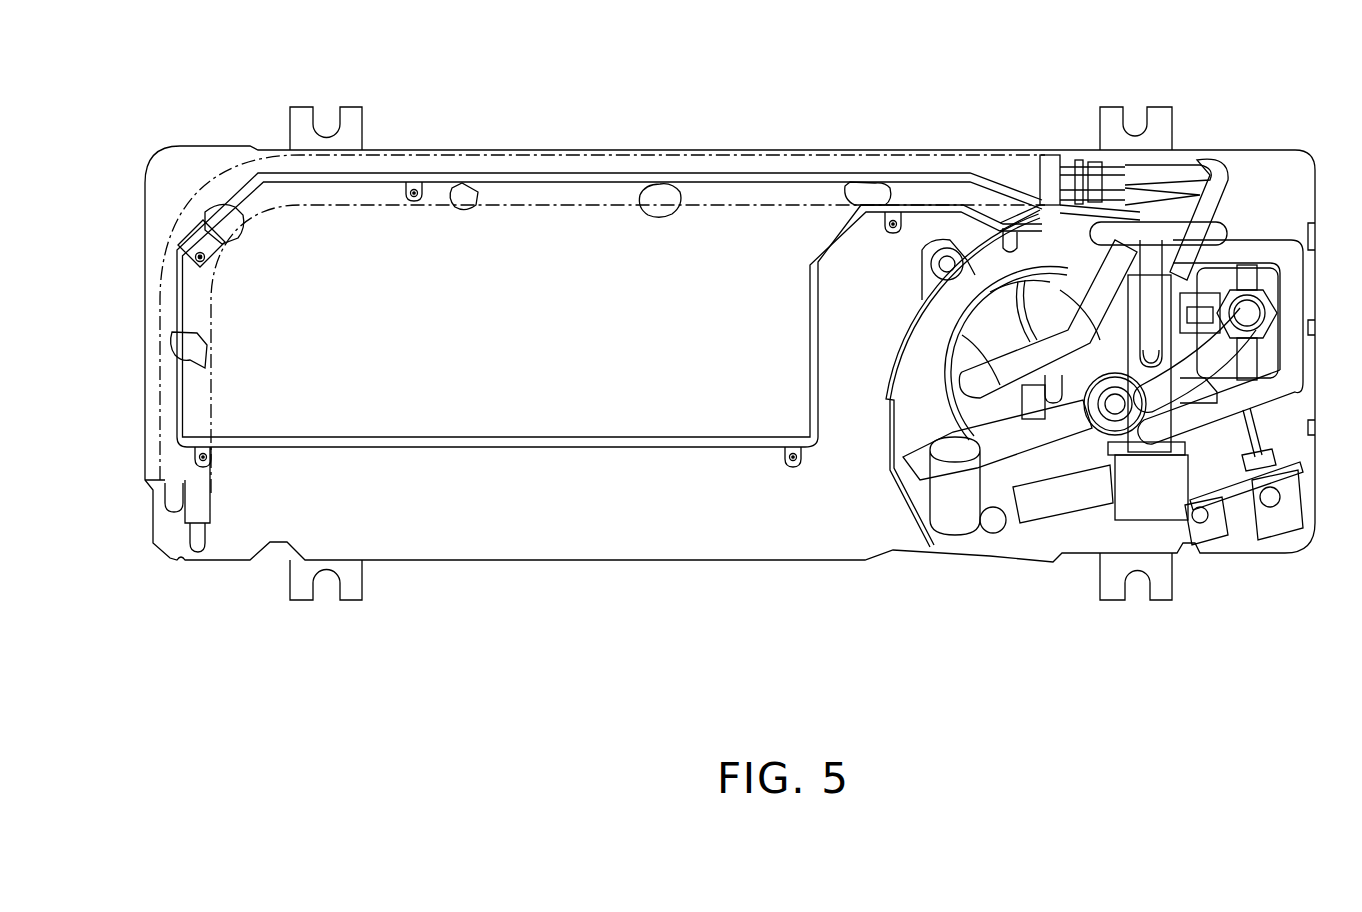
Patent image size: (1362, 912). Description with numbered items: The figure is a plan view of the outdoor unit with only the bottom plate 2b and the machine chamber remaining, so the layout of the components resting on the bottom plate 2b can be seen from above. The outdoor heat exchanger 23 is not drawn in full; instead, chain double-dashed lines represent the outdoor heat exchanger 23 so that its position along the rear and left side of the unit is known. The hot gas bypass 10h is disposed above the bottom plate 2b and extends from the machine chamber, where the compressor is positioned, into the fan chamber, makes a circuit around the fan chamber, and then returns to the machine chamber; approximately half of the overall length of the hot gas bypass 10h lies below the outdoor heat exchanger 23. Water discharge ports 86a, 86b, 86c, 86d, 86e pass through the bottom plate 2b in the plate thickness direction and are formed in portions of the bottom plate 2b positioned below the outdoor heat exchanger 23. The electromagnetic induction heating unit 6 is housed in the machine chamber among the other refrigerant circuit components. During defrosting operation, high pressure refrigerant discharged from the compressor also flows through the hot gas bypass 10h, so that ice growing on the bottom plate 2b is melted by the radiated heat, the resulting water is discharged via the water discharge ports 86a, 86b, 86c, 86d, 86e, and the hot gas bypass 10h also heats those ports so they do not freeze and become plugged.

The bottom plate 2b is at (863, 533).
The outdoor heat exchanger 23 is at (551, 150).
The hot gas bypass 10h is at (813, 293).
The water discharge port 86a is at (212, 337).
The water discharge port 86b is at (220, 227).
The water discharge port 86c is at (453, 200).
The water discharge port 86d is at (658, 205).
The water discharge port 86e is at (855, 193).
The electromagnetic induction heating unit 6 is at (1270, 283).